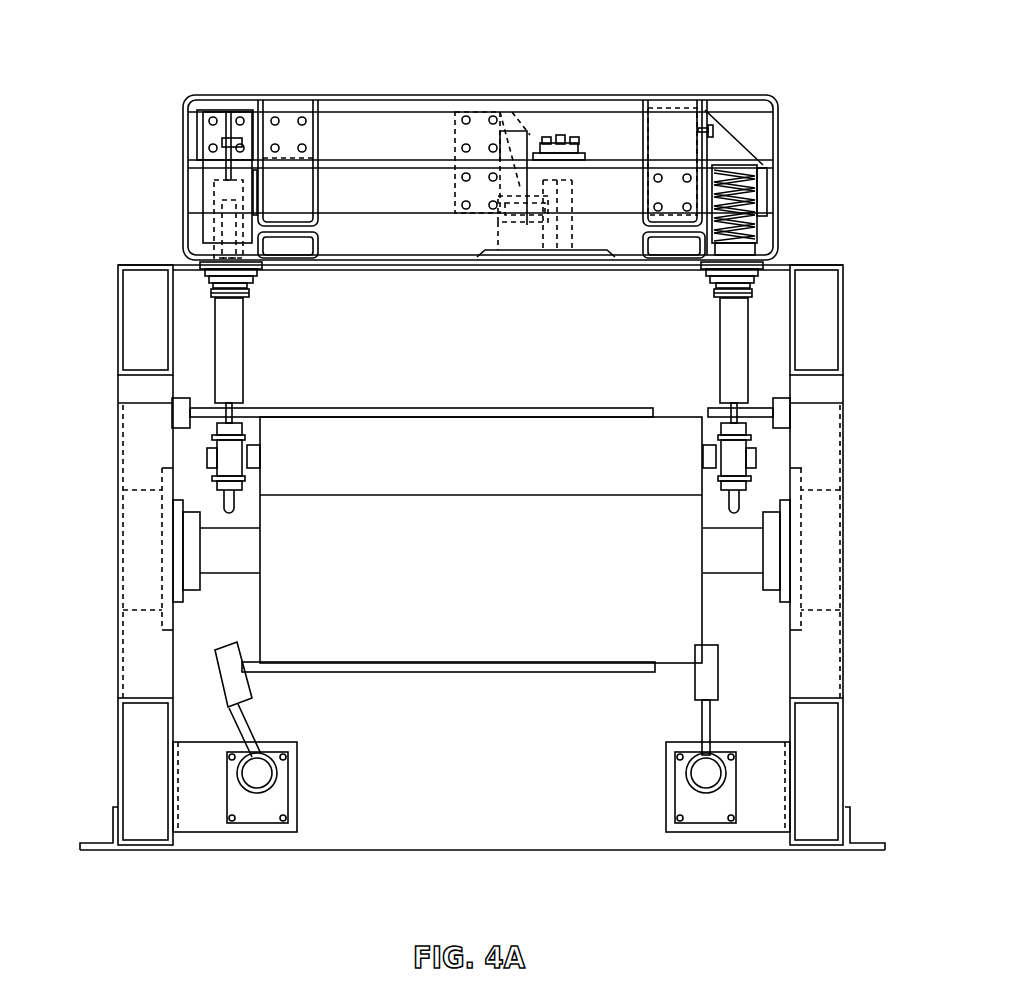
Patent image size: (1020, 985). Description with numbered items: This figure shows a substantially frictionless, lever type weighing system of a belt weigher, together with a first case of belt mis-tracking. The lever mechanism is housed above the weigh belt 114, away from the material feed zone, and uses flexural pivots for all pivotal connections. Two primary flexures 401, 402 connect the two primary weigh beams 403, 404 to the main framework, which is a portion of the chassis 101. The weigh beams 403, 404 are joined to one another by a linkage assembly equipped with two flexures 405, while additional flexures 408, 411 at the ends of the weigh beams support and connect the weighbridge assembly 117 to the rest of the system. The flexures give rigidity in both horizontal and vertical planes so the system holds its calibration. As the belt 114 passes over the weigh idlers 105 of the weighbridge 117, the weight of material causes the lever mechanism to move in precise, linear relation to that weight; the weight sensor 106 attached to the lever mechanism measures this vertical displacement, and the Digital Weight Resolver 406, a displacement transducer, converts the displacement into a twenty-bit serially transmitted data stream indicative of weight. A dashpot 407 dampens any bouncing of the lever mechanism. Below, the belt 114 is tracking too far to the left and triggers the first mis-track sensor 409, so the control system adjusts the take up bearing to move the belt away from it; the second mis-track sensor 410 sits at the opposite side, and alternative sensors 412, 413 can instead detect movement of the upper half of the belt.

The chassis 101 is at (117, 380).
The weigh idlers 105 is at (183, 557).
The weight sensor 106 is at (780, 158).
The belt 114 is at (620, 406).
The weighbridge assembly 117 is at (723, 430).
The primary flexure 401 is at (290, 130).
The primary flexure 402 is at (673, 192).
The primary weigh beam 403 is at (406, 97).
The primary weigh beam 404 is at (617, 165).
The flexures of linkage assembly 405 is at (480, 132).
The Digital Weight Resolver 406 is at (516, 112).
The dashpot 407 is at (478, 112).
The flexure 408 is at (733, 168).
The first mis-track sensor 409 is at (250, 718).
The second mis-track sensor 410 is at (740, 777).
The flexure 411 is at (224, 126).
The mis-track sensor 412 is at (180, 397).
The mis-track sensor 413 is at (787, 394).